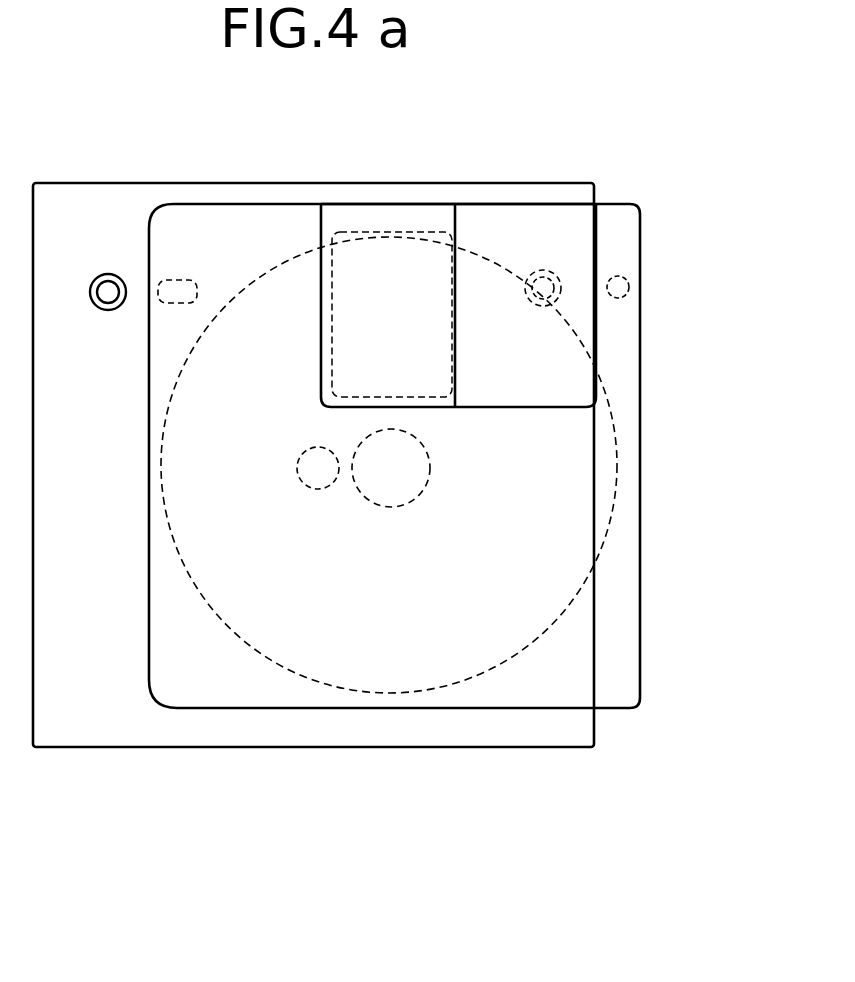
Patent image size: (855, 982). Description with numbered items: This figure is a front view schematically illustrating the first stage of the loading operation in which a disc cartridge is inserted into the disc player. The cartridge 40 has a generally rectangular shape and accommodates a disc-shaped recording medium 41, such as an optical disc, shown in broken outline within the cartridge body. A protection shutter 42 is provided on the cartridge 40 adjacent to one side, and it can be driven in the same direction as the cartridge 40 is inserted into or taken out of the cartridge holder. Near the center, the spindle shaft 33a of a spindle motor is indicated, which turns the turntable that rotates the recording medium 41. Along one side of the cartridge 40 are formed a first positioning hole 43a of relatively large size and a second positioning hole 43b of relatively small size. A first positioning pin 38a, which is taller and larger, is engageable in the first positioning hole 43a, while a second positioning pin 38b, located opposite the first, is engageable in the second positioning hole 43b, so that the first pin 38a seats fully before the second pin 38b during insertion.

The cartridge 40 is at (148, 577).
The disc-shaped recording medium 41 is at (220, 617).
The protection shutter 42 is at (362, 218).
The spindle shaft 33a is at (300, 458).
The first positioning pin 38a is at (103, 306).
The second positioning pin 38b is at (545, 303).
The first positioning hole 43a is at (181, 280).
The second positioning hole 43b is at (620, 298).